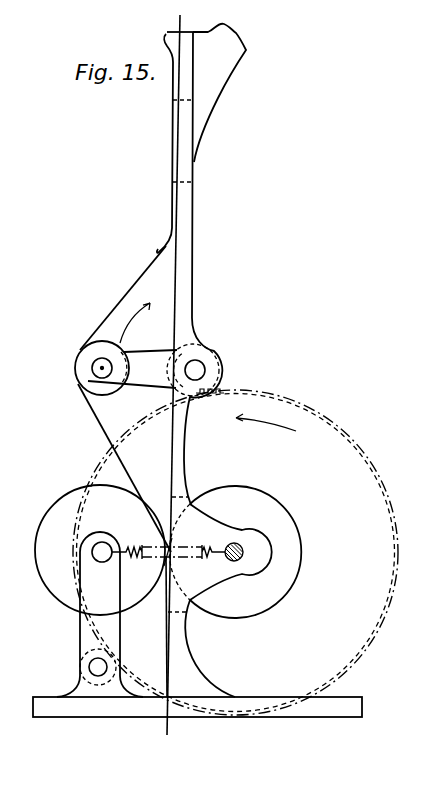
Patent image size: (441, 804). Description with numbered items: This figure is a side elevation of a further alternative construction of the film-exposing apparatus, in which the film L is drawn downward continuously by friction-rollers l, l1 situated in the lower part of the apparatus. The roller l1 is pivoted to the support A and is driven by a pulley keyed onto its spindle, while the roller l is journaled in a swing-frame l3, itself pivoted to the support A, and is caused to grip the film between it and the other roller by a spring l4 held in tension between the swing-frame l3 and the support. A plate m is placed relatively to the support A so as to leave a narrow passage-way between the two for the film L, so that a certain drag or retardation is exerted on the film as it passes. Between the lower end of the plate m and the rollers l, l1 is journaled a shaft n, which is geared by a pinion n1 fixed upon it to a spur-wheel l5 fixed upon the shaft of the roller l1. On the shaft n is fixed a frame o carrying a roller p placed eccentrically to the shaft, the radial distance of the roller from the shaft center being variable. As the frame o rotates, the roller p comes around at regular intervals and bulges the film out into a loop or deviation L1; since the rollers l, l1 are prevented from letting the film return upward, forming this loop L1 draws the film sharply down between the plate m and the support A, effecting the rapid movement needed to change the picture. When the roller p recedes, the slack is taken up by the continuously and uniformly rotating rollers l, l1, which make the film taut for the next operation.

The film L is at (179, 32).
The plate m is at (172, 128).
The loop or deviation L1 is at (138, 280).
The frame o is at (132, 369).
The shaft n is at (203, 364).
The pinion n1 is at (221, 371).
The roller p is at (91, 386).
The friction-roller l is at (130, 550).
The friction-roller l1 is at (235, 591).
The swing-frame l3 is at (80, 640).
The spring l4 is at (176, 554).
The spur-wheel l5 is at (236, 552).
The support A is at (197, 695).